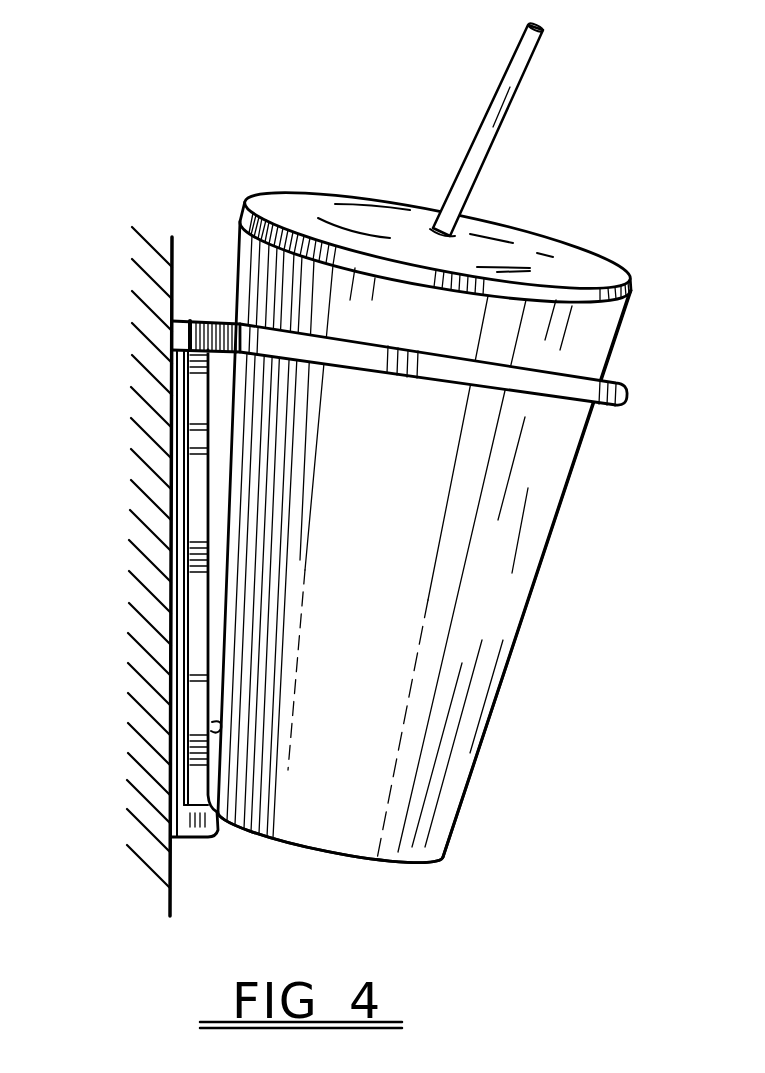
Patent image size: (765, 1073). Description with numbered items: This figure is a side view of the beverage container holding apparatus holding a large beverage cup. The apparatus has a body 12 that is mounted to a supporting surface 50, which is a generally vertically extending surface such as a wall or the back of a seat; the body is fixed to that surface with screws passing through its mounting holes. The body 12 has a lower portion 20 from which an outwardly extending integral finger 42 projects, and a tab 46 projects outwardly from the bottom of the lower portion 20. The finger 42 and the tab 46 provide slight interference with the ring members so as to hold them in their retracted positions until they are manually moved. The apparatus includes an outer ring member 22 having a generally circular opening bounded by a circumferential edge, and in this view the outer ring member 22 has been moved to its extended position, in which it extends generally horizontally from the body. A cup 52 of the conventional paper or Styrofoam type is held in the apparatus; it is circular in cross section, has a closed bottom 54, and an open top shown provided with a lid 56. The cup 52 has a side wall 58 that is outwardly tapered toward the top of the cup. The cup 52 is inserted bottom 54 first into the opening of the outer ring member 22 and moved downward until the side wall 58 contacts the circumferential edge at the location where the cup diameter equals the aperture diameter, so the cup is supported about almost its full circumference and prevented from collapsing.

The body 12 is at (182, 460).
The lower portion 20 is at (178, 629).
The outer ring member 22 is at (192, 690).
The finger 42 is at (211, 727).
The tab 46 is at (205, 812).
The supporting surface 50 is at (172, 254).
The cup 52 is at (424, 542).
The closed bottom 54 is at (397, 862).
The lid 56 is at (522, 242).
The side wall 58 is at (470, 777).